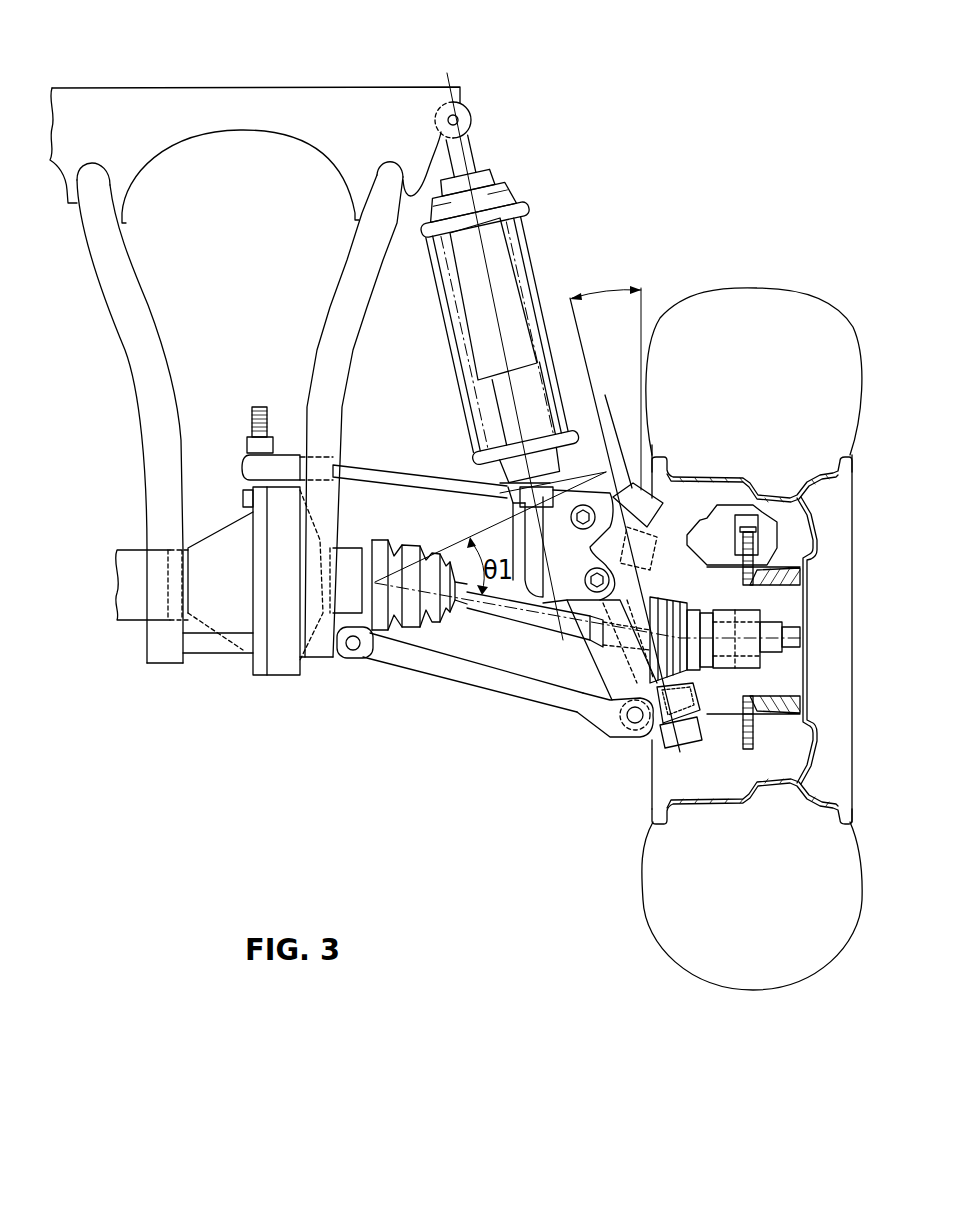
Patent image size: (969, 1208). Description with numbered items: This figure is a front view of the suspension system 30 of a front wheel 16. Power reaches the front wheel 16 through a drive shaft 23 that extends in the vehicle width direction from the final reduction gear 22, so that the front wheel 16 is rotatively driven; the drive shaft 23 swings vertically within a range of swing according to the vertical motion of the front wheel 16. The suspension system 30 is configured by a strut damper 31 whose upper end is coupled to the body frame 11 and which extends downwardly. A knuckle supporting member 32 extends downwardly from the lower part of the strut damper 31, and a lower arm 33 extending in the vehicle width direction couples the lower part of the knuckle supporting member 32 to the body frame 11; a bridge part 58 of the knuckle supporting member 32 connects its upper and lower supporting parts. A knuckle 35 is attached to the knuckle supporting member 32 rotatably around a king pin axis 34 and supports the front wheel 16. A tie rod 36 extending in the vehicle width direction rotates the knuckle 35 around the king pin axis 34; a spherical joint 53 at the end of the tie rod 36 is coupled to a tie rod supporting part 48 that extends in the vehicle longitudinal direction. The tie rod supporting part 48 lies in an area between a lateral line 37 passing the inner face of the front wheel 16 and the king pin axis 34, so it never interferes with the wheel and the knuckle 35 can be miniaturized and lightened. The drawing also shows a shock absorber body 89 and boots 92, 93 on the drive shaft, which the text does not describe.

The body frame 11 is at (242, 107).
The front wheel 16 is at (758, 278).
The final reduction gear 22 is at (287, 678).
The drive shaft 23 is at (522, 617).
The suspension system 30 is at (626, 168).
The strut damper 31 is at (568, 272).
The knuckle supporting member 32 is at (605, 715).
The lower arm 33 is at (455, 667).
The king pin axis 34 is at (584, 355).
The knuckle 35 is at (657, 762).
The tie rod 36 is at (392, 470).
The lateral line 37 is at (643, 436).
The tie rod supporting part 48 is at (618, 447).
The spherical joint 53 is at (581, 471).
The bridge part 58 is at (630, 632).
The shock absorber 89 is at (484, 263).
The inner joint boot 92 is at (412, 540).
The outer joint boot 93 is at (617, 653).